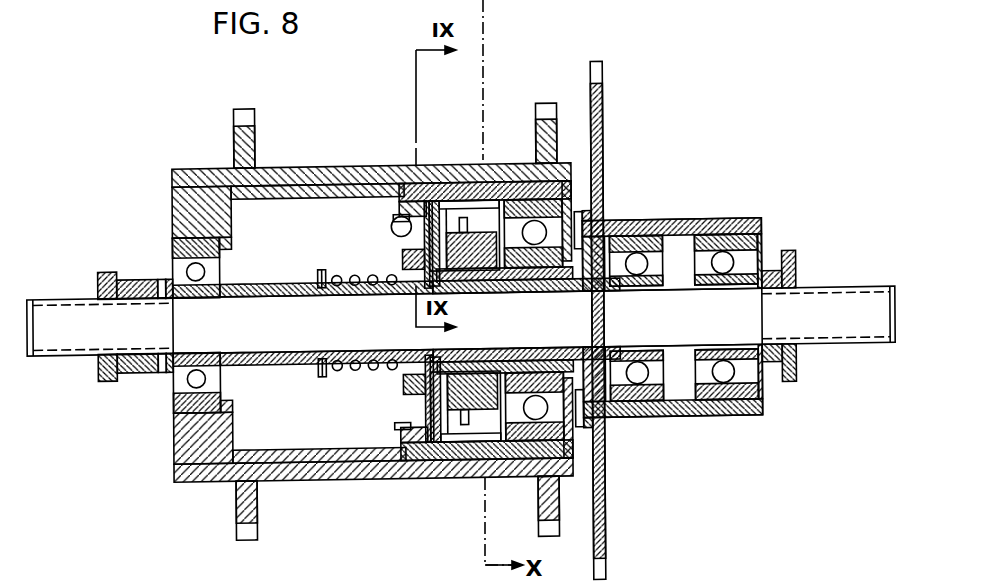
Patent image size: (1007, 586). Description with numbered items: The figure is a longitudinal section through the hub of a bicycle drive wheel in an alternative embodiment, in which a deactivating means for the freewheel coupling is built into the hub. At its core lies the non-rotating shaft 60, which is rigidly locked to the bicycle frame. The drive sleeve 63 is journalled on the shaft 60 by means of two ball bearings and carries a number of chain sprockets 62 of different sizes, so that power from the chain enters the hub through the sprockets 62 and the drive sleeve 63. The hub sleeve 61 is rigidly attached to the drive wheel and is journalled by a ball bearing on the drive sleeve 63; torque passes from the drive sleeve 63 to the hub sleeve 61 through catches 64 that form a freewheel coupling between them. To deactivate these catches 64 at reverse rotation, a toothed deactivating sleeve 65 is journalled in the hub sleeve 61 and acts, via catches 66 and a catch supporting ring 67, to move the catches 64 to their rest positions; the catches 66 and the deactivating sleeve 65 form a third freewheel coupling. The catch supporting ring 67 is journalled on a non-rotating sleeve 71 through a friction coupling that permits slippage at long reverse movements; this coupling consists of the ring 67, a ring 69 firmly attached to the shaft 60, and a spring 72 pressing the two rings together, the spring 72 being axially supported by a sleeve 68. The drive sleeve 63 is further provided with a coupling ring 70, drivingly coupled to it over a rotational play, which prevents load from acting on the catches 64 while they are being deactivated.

The non-rotating shaft 60 is at (865, 292).
The hub sleeve 61 is at (483, 185).
The chain sprockets 62 is at (600, 76).
The drive sleeve 63 is at (736, 222).
The catches 64 is at (450, 230).
The toothed deactivating sleeve 65 is at (400, 205).
The catches 66 is at (396, 222).
The catch supporting ring 67 is at (403, 258).
The sleeve 68 is at (278, 365).
The ring 69 is at (425, 403).
The coupling ring 70 is at (458, 472).
The non-rotating sleeve 71 is at (368, 373).
The spring 72 is at (333, 375).